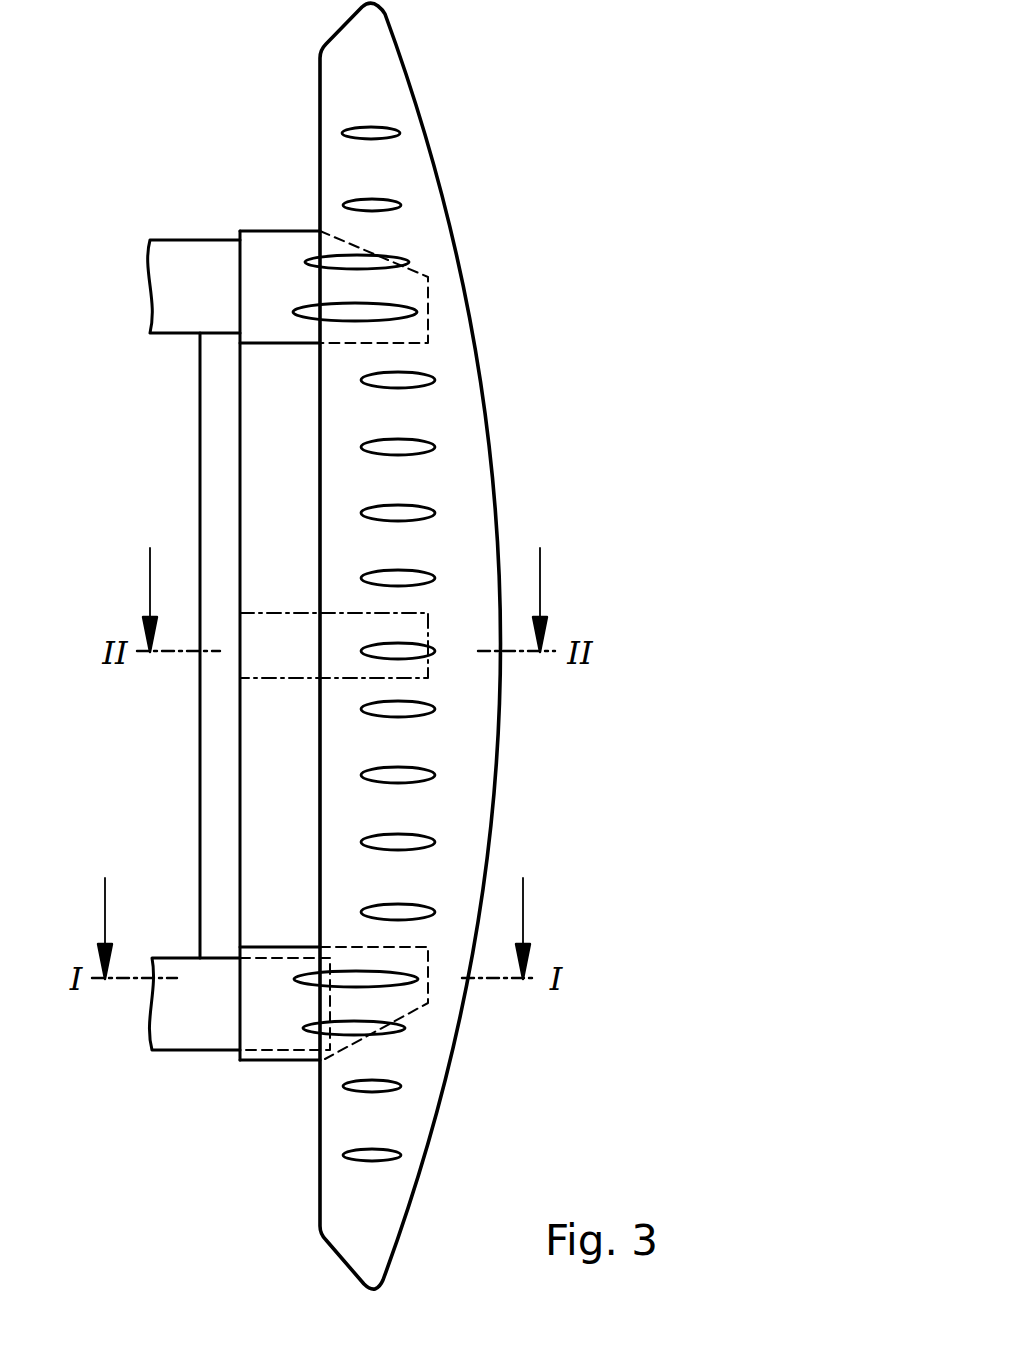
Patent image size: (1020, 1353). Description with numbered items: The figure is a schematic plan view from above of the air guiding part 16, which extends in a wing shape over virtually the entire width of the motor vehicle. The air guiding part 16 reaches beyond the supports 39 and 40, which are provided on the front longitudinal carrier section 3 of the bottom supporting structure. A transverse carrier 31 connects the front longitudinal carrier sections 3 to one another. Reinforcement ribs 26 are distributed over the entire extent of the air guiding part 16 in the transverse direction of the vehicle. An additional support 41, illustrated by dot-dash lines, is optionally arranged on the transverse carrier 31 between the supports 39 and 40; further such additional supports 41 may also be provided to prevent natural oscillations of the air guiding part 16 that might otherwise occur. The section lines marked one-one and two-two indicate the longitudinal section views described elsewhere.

The front longitudinal carrier section 3 is at (184, 255).
The air guiding part 16 is at (490, 382).
The reinforcement ribs 26 is at (390, 130).
The transverse carrier 31 is at (215, 724).
The support 39 is at (428, 296).
The support 40 is at (430, 997).
The additional support 41 is at (428, 675).